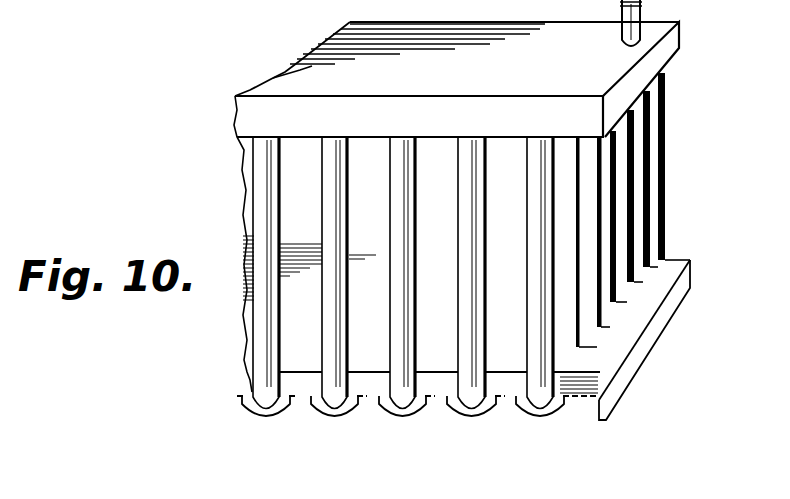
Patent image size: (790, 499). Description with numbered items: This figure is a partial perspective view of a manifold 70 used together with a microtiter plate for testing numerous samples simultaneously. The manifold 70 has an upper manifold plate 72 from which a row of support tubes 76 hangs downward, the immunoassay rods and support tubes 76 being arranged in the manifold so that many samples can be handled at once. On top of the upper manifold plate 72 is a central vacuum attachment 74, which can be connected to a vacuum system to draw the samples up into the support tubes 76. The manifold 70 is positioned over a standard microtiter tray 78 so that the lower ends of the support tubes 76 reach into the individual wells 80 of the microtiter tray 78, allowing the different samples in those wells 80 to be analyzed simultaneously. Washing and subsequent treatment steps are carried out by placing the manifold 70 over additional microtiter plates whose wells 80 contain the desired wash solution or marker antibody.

The manifold 70 is at (673, 160).
The upper manifold plate 72 is at (340, 72).
The central vacuum attachment 74 is at (641, 13).
The support tubes 76 is at (333, 232).
The microtiter tray 78 is at (643, 352).
The wells 80 is at (318, 403).